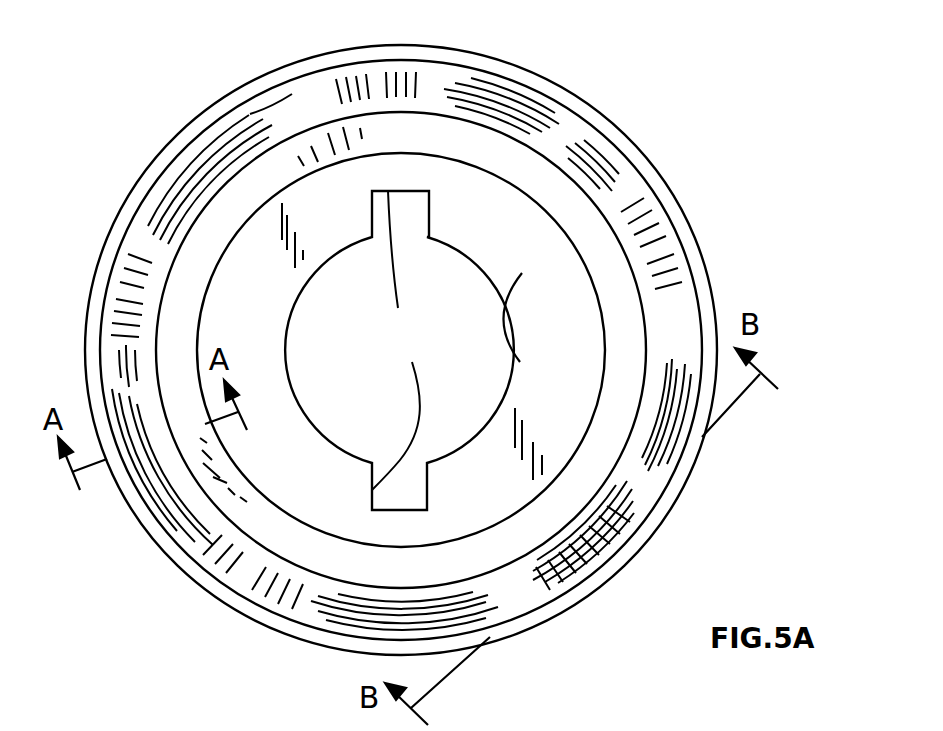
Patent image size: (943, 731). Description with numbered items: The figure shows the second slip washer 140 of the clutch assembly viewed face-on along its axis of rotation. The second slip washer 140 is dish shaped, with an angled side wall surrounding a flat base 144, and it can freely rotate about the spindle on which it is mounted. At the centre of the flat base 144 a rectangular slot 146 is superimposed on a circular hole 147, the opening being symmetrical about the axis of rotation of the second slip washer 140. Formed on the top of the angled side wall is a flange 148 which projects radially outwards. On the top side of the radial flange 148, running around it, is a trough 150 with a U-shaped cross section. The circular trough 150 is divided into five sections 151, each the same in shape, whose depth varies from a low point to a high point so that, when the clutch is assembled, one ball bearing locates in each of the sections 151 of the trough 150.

The second slip washer 140 is at (692, 190).
The flat base 144 is at (218, 312).
The rectangular slot 146 is at (399, 350).
The circular hole 147 is at (532, 298).
The flange 148 is at (193, 128).
The trough 150 is at (250, 113).
The sections 151 is at (188, 168).